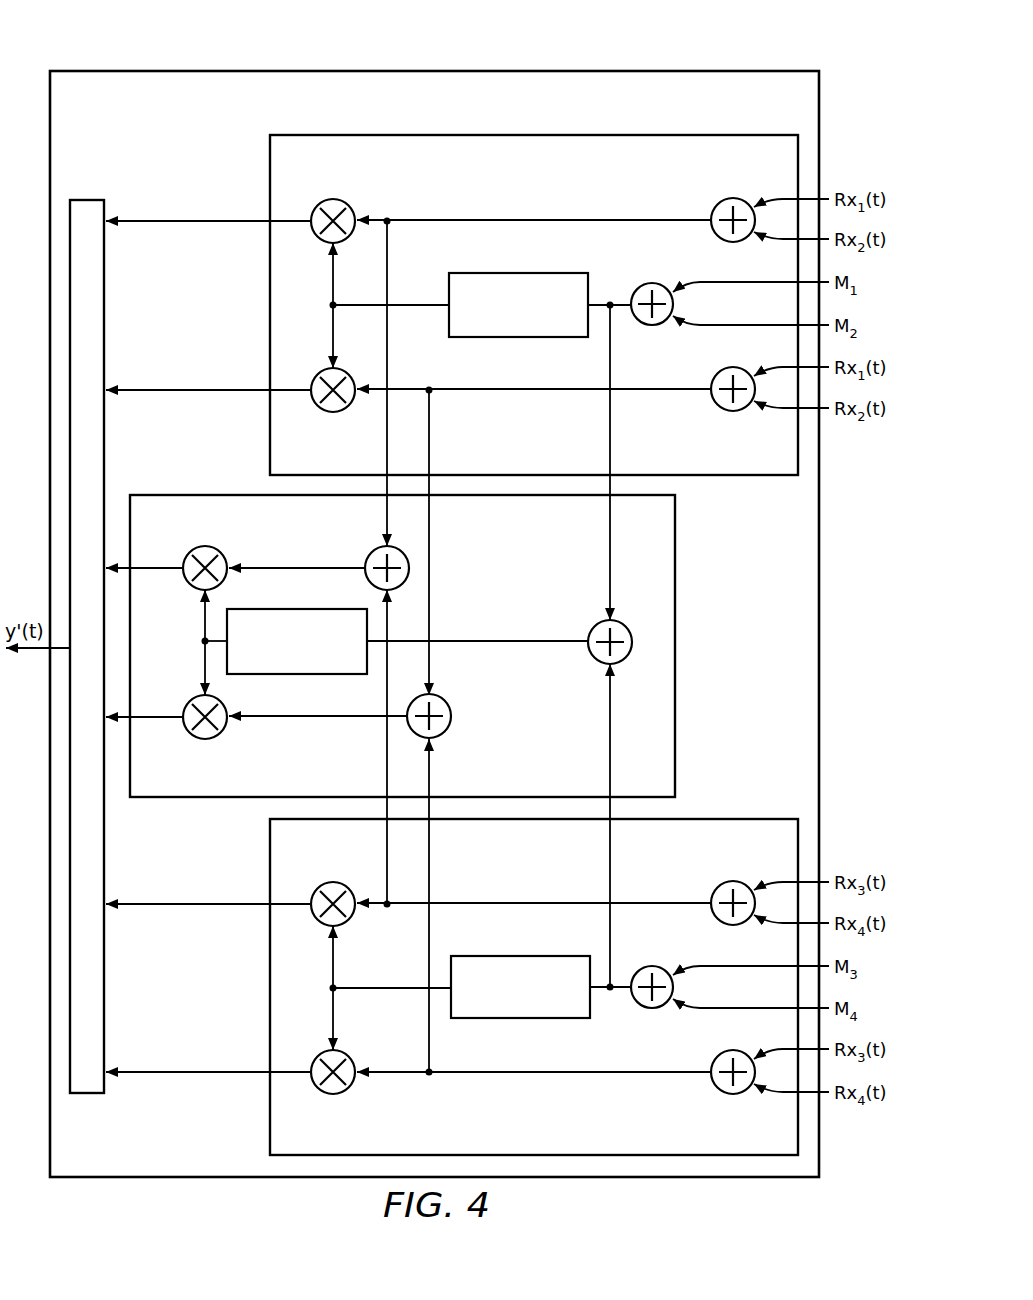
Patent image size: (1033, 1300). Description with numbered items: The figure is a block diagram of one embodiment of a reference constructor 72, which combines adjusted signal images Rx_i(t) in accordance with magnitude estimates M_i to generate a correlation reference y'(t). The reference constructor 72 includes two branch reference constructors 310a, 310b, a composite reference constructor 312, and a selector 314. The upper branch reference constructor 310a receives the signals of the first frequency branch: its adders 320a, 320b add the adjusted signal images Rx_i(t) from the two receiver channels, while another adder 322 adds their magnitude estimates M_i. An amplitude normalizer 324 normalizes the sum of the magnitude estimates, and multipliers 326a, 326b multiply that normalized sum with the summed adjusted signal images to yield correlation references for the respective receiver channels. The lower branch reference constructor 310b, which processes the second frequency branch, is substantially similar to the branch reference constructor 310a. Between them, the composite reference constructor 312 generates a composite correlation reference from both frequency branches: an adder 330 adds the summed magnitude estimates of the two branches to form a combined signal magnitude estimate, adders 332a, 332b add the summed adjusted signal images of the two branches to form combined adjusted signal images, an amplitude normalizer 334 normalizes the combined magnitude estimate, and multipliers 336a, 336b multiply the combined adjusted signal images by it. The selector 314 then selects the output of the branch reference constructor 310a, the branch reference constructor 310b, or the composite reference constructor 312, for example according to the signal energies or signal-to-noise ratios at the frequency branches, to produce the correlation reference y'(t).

The reference constructor 72 is at (261, 69).
The selector 314 is at (85, 199).
The branch reference constructor 310a is at (266, 186).
The branch reference constructor 310b is at (266, 1103).
The composite reference constructor 312 is at (678, 596).
The adder 320a is at (745, 200).
The adder 320b is at (747, 409).
The adder 322 is at (665, 285).
The amplitude normalizer 324 is at (531, 272).
The multiplier 326a is at (318, 202).
The multiplier 326b is at (321, 409).
The adder 330 is at (627, 621).
The adder 332a is at (371, 551).
The adder 332b is at (445, 731).
The amplitude normalizer 334 is at (268, 608).
The multiplier 336a is at (192, 549).
The multiplier 336b is at (191, 698).